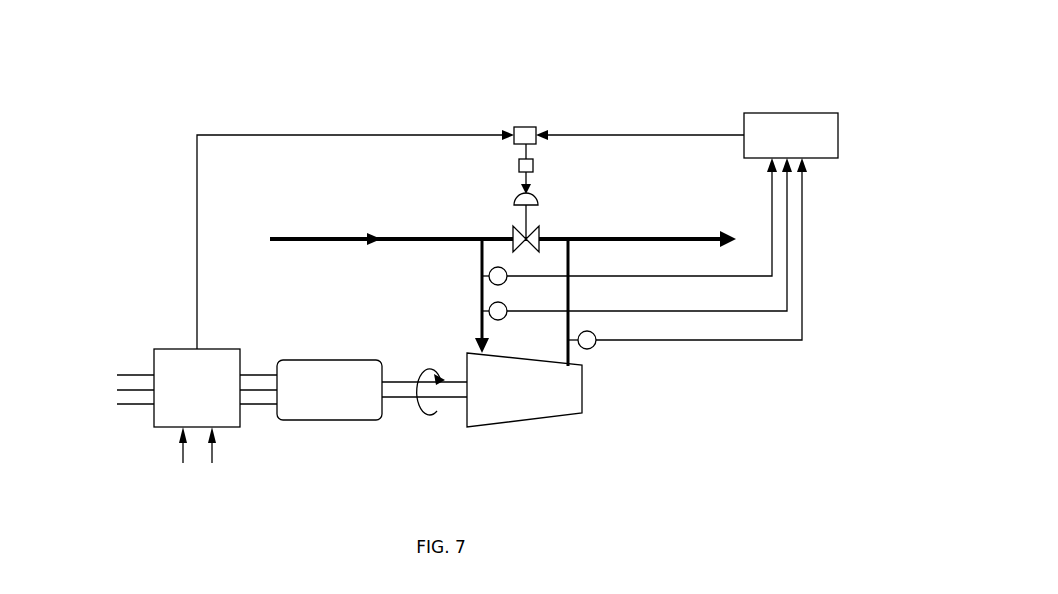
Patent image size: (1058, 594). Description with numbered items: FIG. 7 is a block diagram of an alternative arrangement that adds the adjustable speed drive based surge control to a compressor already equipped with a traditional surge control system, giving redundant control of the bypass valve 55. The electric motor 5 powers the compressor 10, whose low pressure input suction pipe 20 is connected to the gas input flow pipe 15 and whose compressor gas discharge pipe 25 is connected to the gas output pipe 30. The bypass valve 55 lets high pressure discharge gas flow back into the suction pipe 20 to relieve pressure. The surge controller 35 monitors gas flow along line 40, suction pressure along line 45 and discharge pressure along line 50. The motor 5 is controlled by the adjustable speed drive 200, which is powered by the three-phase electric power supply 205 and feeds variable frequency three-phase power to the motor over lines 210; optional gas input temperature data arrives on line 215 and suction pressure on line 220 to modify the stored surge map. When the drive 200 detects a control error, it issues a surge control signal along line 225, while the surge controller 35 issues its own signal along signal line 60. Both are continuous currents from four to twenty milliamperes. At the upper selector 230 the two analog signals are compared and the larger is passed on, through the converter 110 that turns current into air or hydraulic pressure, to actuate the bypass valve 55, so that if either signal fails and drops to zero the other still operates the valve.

The electric motor 5 is at (312, 420).
The compressor 10 is at (582, 385).
The gas input flow pipe 15 is at (331, 238).
The low pressure input suction pipe 20 is at (480, 266).
The compressor gas discharge pipe 25 is at (570, 258).
The gas output pipe 30 is at (688, 235).
The surge controller 35 is at (757, 113).
The flow measurement line 40 is at (640, 275).
The suction pressure measurement line 45 is at (640, 310).
The discharge pressure measurement line 50 is at (645, 340).
The bypass valve 55 is at (539, 232).
The signal line 60 is at (675, 134).
The converter 110 is at (519, 166).
The adjustable speed drive 200 is at (210, 349).
The three-phase electric power supply 205 is at (117, 390).
The lines 210 is at (263, 372).
The line 215 is at (183, 455).
The line 220 is at (212, 455).
The line 225 is at (197, 172).
The upper selector 230 is at (527, 127).